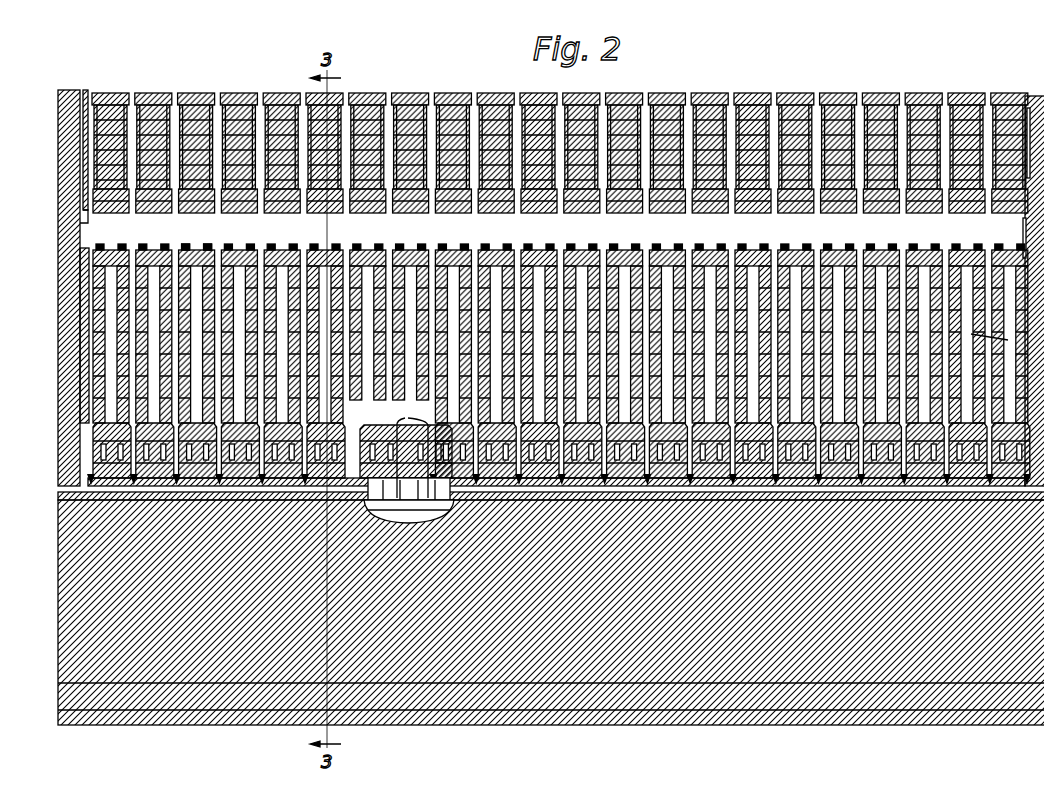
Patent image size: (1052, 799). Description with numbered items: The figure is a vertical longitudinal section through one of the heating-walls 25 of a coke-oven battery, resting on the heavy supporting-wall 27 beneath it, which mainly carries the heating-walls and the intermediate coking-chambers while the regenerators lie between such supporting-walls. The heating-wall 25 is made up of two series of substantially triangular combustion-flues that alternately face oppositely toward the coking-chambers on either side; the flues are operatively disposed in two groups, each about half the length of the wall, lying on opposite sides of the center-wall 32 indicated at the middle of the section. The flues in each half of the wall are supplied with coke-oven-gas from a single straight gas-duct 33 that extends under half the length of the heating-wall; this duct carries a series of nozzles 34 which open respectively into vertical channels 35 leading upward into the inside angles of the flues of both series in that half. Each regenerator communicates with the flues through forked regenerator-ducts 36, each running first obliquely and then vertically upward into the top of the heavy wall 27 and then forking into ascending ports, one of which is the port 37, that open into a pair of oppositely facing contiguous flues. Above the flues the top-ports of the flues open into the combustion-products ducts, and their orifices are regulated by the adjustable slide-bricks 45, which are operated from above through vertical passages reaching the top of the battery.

The heating-wall 25 is at (76, 330).
The heavy supporting-wall 27 is at (60, 553).
The center-wall 32 is at (498, 300).
The gas-duct 33 is at (55, 483).
The nozzles 34 is at (80, 468).
The vertical channels 35 is at (88, 433).
The forked regenerator-duct 36 is at (407, 496).
The ascending port 37 is at (412, 448).
The adjustable slide-bricks 45 is at (199, 238).